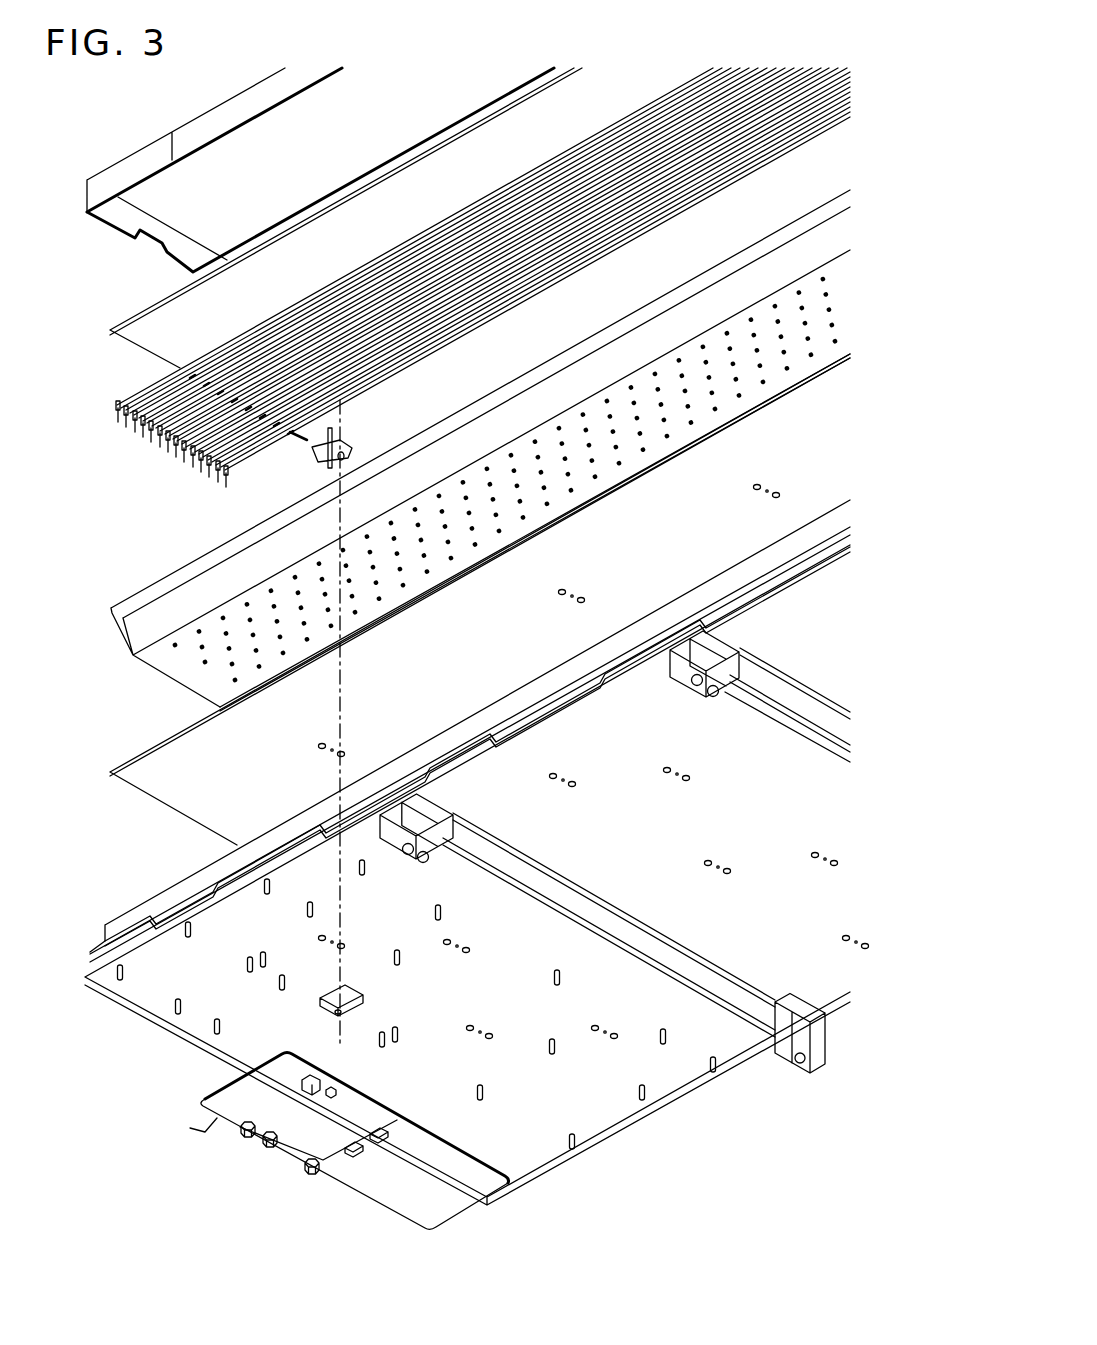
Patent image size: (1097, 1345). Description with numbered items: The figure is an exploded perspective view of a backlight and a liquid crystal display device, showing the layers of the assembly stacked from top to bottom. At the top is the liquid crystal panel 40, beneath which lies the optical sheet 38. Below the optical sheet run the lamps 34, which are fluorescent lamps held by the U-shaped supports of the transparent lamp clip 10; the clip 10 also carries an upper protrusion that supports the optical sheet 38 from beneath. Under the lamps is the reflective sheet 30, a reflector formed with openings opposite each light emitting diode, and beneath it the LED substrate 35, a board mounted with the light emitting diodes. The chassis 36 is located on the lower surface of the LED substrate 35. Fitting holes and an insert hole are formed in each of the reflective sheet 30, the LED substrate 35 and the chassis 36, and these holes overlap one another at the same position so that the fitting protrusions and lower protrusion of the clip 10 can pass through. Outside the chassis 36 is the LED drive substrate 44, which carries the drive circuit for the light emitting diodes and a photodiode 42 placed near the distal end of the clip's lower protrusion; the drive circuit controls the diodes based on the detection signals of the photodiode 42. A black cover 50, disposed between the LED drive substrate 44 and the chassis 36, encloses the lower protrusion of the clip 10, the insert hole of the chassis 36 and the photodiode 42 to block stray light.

The lamp clip 10 is at (310, 445).
The reflective sheet 30 is at (138, 595).
The lamps 34 is at (138, 398).
The LED substrate 35 is at (138, 753).
The chassis 36 is at (138, 905).
The optical sheet 38 is at (138, 312).
The liquid crystal panel 40 is at (138, 150).
The photodiode 42 is at (342, 1035).
The LED drive substrate 44 is at (210, 1124).
The cover 50 is at (322, 995).